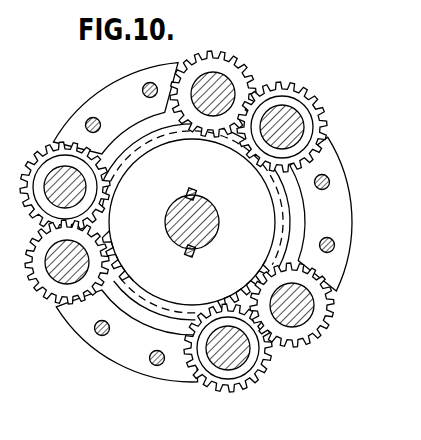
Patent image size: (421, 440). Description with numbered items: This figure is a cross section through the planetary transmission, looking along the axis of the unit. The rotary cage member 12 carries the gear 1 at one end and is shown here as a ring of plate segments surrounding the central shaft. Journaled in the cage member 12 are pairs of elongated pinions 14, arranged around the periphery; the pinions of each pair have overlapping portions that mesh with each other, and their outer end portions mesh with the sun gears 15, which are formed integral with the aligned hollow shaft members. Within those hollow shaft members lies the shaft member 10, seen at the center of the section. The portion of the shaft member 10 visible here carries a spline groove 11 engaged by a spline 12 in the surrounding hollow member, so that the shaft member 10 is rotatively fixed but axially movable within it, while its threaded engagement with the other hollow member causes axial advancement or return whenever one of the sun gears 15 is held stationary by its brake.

The gear 1 is at (194, 239).
The shaft member 10 is at (213, 220).
The spline groove 11 is at (195, 192).
The cage member 12 is at (195, 248).
The elongated pinions 14 is at (307, 97).
The sun gears 15 is at (127, 277).